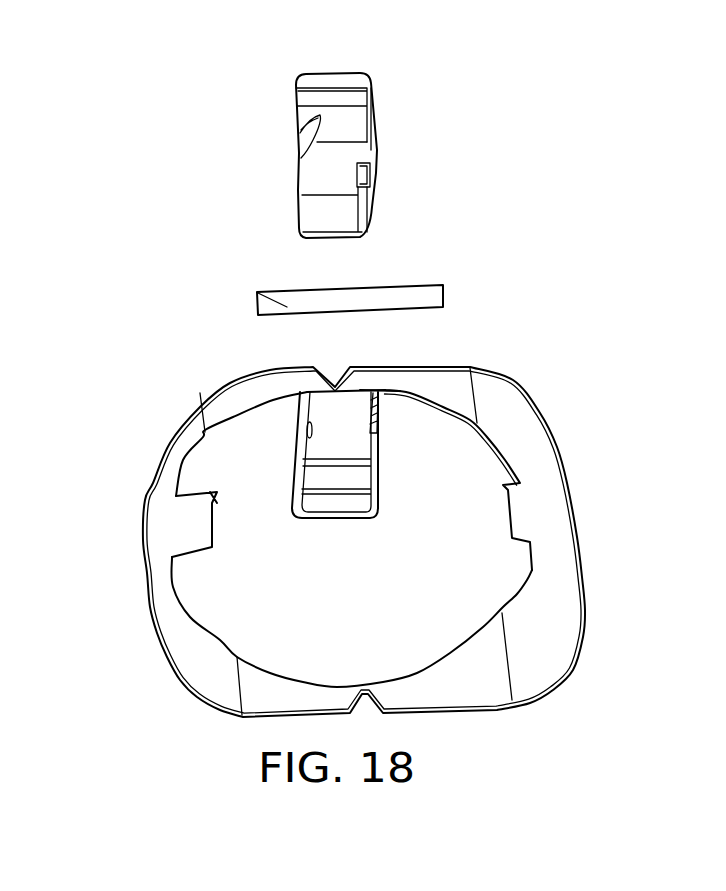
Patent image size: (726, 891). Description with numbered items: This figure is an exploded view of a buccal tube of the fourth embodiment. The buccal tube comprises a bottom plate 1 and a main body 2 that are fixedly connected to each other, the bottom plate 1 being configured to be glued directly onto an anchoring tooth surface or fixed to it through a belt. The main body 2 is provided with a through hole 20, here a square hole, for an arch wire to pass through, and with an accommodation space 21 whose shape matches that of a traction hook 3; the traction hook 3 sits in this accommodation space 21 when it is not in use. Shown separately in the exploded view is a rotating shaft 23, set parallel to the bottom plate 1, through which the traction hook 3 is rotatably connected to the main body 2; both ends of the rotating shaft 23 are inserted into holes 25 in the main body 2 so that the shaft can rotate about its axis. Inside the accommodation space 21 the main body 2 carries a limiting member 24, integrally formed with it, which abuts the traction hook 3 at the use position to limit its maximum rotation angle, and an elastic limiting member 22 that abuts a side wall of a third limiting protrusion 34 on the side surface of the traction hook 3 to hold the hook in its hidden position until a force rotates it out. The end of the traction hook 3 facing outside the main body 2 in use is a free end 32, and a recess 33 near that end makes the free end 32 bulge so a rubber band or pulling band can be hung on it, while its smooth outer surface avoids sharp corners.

The bottom plate 1 is at (217, 697).
The main body 2 is at (293, 491).
The through hole 20 is at (212, 503).
The accommodation space 21 is at (321, 435).
The elastic limiting member 22 is at (387, 415).
The rotating shaft 23 is at (290, 308).
The limiting member 24 is at (383, 392).
The holes 25 is at (307, 428).
The traction hook 3 is at (321, 145).
The free end 32 is at (328, 88).
The recess 33 is at (313, 120).
The third limiting protrusion 34 is at (370, 183).